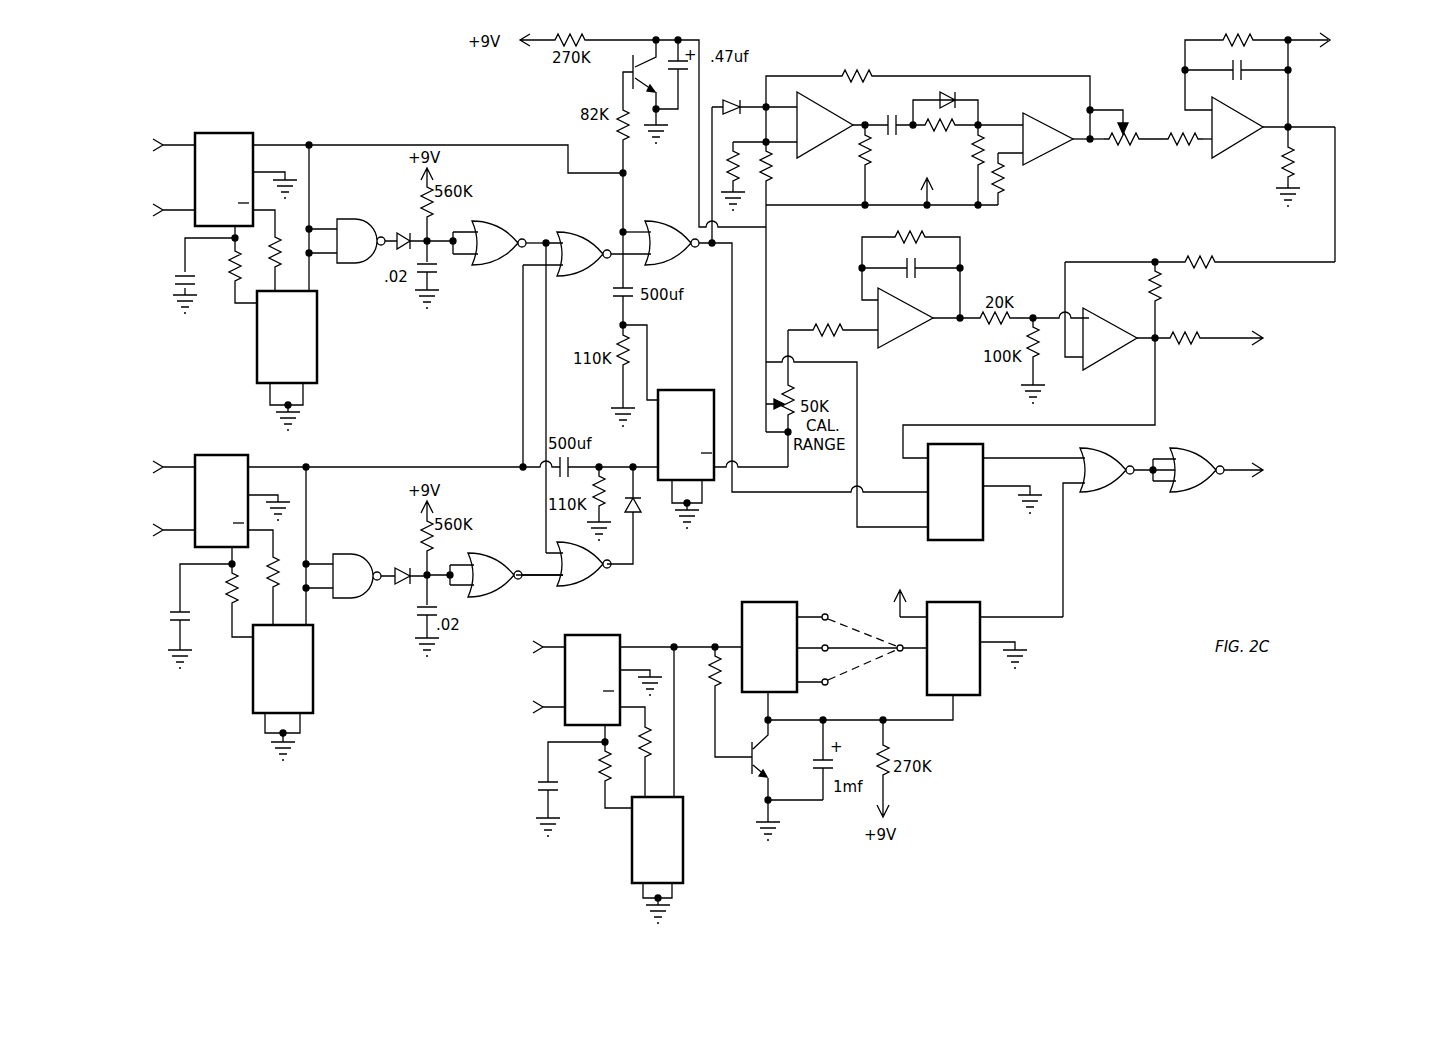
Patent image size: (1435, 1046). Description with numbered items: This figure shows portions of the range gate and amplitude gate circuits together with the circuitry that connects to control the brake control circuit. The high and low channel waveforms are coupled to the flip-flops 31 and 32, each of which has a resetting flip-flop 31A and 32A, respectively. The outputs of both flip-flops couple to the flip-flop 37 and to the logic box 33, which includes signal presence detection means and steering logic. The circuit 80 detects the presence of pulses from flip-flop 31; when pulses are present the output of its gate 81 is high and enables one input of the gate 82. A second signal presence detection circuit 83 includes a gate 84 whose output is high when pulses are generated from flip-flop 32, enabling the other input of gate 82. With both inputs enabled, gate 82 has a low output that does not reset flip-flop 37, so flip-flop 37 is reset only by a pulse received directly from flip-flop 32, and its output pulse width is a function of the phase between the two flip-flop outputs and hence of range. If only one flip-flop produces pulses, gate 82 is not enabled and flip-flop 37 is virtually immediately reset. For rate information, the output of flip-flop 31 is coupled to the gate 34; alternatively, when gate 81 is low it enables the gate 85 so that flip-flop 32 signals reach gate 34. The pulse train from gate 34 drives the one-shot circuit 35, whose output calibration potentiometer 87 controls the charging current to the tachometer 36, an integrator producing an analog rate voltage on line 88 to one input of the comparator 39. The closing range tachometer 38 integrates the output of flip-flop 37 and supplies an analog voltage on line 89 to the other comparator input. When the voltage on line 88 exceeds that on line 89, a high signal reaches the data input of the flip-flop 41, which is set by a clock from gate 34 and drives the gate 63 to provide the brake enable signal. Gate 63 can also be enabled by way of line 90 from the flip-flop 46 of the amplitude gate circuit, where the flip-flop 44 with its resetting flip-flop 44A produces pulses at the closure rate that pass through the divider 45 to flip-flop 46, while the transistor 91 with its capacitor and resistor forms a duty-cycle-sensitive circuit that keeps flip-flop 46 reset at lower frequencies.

The flip-flop 31 is at (230, 190).
The resetting flip-flop 31A is at (302, 350).
The flip-flop 32 is at (226, 517).
The resetting flip-flop 32A is at (298, 682).
The logic box 33 is at (456, 390).
The gate 34 is at (679, 254).
The one-shot circuit 35 is at (953, 72).
The tachometer 36 is at (1246, 139).
The flip-flop 37 is at (696, 440).
The closing range tachometer 38 is at (914, 329).
The comparator 39 is at (1117, 352).
The flip-flop 41 is at (972, 519).
The flip-flop 44 is at (597, 693).
The resetting flip-flop 44A is at (674, 856).
The divider 45 is at (782, 633).
The flip-flop 46 is at (968, 673).
The gate 63 is at (1114, 481).
The signal presence detection circuit 80 is at (408, 224).
The gate 81 is at (511, 254).
The gate 82 is at (592, 575).
The signal presence detection circuit 83 is at (408, 556).
The gate 84 is at (507, 586).
The gate 85 is at (592, 265).
The output calibration potentiometer 87 is at (1128, 146).
The line 88 is at (1337, 212).
The line 89 is at (962, 320).
The line 90 is at (1066, 582).
The transistor 91 is at (762, 766).